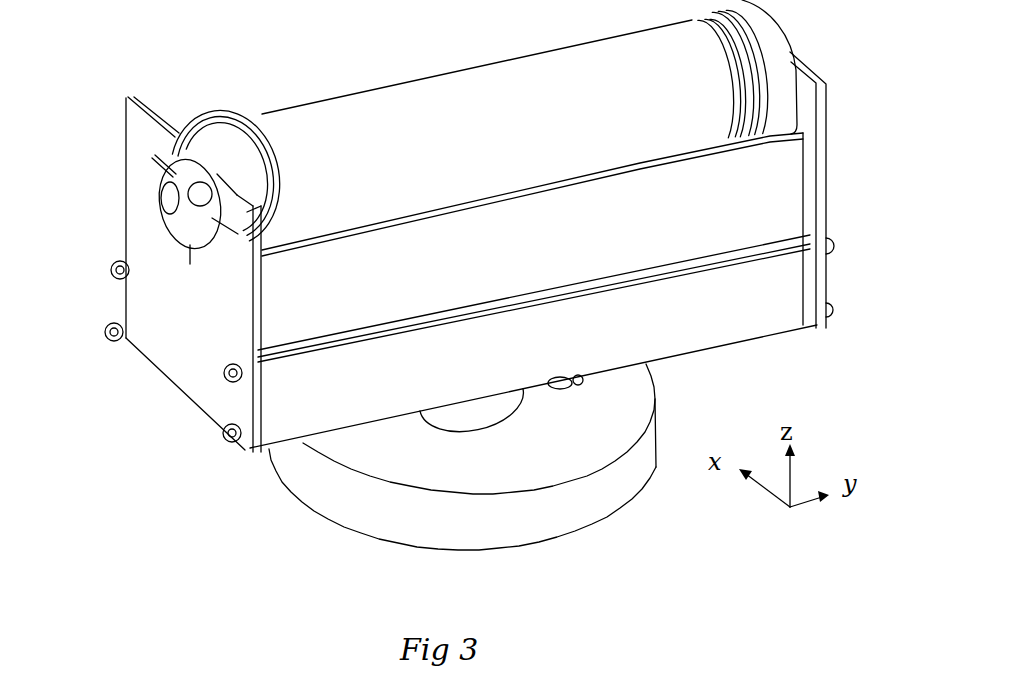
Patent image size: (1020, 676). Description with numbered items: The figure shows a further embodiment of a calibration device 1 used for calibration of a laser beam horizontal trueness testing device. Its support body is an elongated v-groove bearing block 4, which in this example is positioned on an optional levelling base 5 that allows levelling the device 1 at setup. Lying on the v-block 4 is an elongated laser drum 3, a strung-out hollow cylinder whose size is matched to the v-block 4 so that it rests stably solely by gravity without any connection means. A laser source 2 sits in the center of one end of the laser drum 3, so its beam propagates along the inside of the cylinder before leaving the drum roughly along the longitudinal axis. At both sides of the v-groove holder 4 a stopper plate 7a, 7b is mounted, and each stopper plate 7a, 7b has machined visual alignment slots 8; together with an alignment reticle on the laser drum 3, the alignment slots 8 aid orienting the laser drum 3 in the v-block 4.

The calibration device 1 is at (451, 275).
The laser source 2 is at (236, 157).
The laser drum 3 is at (484, 120).
The v-groove bearing block 4 is at (533, 290).
The levelling base 5 is at (440, 457).
The stopper plate 7a is at (183, 274).
The stopper plate 7b is at (752, 190).
The visual alignment slots 8 is at (217, 223).